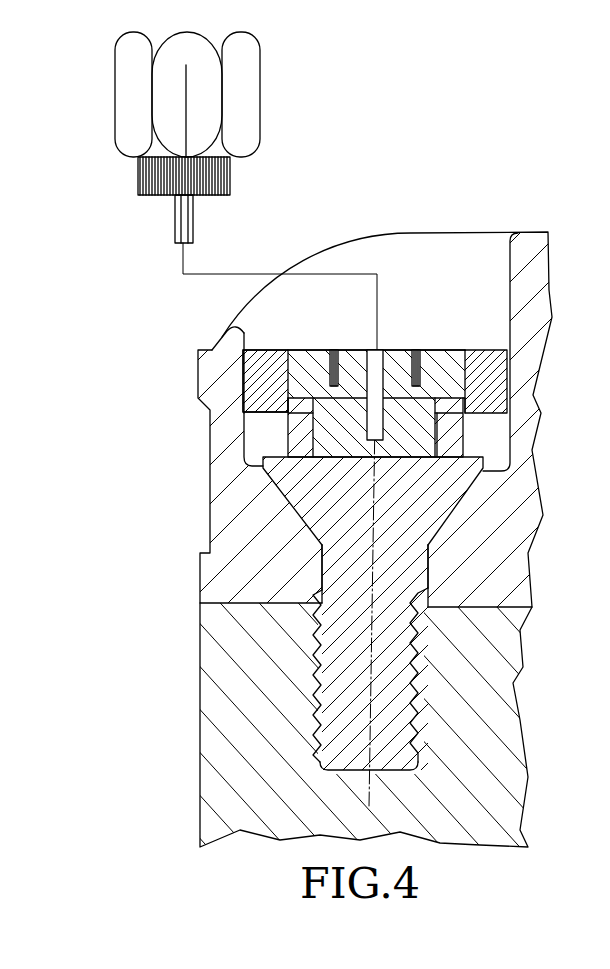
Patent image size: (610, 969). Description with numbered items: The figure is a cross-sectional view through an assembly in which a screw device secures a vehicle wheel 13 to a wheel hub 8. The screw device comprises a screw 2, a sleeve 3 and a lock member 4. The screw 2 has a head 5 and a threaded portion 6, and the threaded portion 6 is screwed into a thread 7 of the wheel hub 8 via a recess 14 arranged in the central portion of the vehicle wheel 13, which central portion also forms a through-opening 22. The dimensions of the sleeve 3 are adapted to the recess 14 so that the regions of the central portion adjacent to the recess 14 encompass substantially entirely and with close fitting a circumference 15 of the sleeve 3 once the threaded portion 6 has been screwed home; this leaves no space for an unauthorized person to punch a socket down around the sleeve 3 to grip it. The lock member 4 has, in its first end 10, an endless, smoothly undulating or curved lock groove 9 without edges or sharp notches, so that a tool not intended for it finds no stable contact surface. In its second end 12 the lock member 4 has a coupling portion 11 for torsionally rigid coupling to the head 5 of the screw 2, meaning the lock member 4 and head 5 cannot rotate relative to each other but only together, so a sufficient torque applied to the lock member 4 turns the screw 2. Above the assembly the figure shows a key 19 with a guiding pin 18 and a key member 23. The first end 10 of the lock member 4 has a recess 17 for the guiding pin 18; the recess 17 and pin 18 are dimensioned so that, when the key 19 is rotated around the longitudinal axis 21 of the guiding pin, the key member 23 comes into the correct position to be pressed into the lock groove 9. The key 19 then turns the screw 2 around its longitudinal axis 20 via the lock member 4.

The screw 2 is at (399, 697).
The sleeve 3 is at (489, 351).
The lock member 4 is at (434, 351).
The head 5 is at (450, 442).
The threaded portion 6 is at (322, 645).
The thread 7 is at (312, 722).
The wheel hub 8 is at (235, 768).
The lock groove 9 is at (334, 350).
The first end 10 is at (312, 350).
The coupling portion 11 is at (457, 430).
The second end 12 is at (280, 505).
The vehicle wheel 13 is at (198, 373).
The recess 14 is at (260, 430).
The circumference 15 is at (243, 332).
The recess 17 is at (385, 345).
The guiding pin 18 is at (174, 224).
The key 19 is at (275, 90).
The longitudinal axis 20 is at (377, 298).
The longitudinal axis 21 is at (181, 257).
The through-opening 22 is at (430, 587).
The key member 23 is at (230, 172).